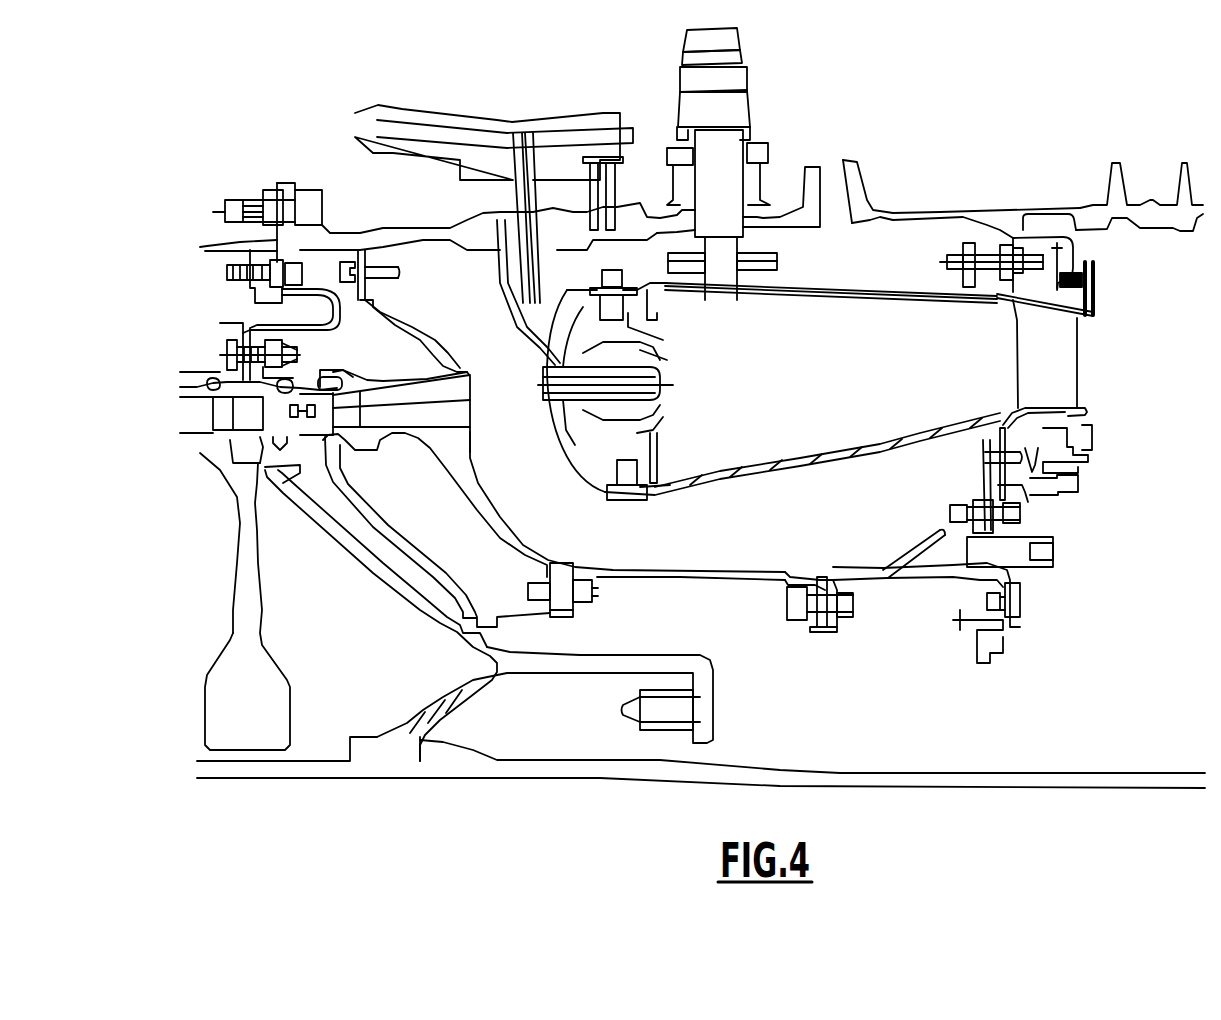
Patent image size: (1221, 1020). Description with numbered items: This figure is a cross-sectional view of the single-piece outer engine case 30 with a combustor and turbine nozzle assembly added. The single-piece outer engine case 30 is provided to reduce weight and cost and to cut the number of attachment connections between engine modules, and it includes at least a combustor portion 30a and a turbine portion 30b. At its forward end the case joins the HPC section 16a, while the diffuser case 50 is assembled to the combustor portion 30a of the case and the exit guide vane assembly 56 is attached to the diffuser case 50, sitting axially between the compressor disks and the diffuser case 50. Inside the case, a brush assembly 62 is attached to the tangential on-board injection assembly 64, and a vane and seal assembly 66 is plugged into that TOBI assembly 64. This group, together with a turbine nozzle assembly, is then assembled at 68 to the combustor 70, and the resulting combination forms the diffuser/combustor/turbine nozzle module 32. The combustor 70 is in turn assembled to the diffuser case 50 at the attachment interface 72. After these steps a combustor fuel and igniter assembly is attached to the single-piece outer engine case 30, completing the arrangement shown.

The HPC section 16a is at (238, 281).
The combustor portion 30a is at (480, 249).
The single-piece outer engine case 30 is at (868, 164).
The turbine portion 30b is at (1113, 178).
The diffuser/combustor/turbine nozzle module 32 is at (799, 660).
The diffuser case 50 is at (627, 524).
The exit guide vane (EGV) assembly 56 is at (407, 599).
The brush assembly 62 is at (1005, 600).
The tangential on-board injection (TOBI) assembly 64 is at (902, 578).
The vane and seal assembly 66 is at (899, 369).
The assembly location 68 is at (955, 499).
The combustor 70 is at (769, 402).
The attachment interface 72 is at (607, 108).